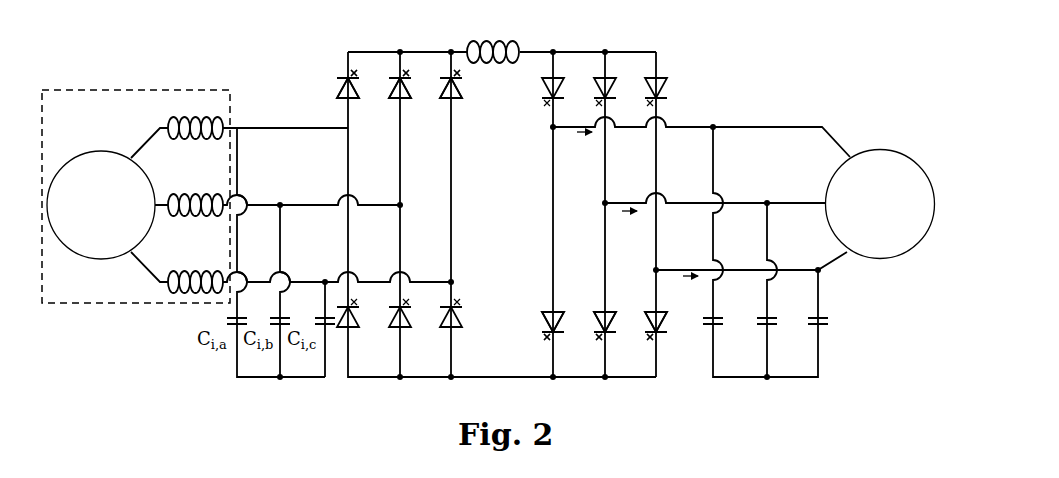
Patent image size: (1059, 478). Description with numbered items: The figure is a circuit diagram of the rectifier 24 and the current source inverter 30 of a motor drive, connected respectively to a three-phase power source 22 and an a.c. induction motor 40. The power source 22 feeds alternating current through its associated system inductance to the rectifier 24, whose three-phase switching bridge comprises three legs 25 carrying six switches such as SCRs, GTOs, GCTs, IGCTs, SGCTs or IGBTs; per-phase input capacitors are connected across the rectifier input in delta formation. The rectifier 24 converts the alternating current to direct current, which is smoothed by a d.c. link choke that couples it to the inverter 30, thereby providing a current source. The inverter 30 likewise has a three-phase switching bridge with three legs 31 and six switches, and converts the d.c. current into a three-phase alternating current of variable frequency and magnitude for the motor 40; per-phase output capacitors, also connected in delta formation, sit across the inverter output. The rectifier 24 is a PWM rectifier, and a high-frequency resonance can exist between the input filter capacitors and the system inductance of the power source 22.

The three-phase power source 22 is at (155, 90).
The rectifier 24 is at (321, 83).
The legs 25 is at (348, 145).
The current source inverter 30 is at (683, 84).
The legs 31 is at (656, 262).
The a.c. induction motor 40 is at (901, 152).